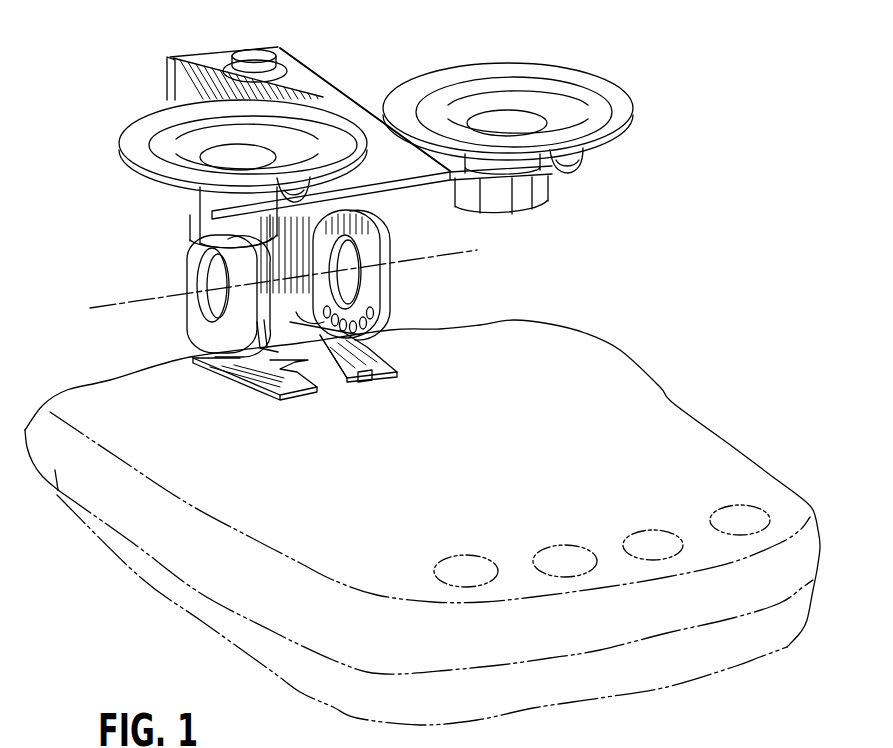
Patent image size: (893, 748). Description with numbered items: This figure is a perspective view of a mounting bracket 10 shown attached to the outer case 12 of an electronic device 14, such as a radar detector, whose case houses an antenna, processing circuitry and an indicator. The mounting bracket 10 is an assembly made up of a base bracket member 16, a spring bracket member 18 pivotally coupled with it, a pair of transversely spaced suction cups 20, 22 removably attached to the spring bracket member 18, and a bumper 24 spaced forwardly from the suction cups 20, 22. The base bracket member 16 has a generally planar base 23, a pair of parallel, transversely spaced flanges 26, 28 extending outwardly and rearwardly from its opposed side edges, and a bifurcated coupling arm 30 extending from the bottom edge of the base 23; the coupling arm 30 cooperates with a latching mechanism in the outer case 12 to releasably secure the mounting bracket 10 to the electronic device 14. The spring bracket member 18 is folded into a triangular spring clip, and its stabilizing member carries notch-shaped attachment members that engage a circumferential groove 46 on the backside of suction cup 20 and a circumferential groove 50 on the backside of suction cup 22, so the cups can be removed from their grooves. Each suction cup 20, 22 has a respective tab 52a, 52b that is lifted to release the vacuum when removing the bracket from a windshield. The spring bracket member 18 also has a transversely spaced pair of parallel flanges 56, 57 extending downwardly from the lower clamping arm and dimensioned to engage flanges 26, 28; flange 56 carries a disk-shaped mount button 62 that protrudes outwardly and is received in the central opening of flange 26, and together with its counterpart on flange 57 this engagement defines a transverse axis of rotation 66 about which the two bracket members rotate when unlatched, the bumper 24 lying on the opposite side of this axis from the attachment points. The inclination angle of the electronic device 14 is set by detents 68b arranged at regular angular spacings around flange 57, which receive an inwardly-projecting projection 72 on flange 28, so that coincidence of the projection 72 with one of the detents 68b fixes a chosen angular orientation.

The mounting bracket 10 is at (572, 36).
The outer case 12 is at (613, 342).
The electronic device 14 is at (763, 653).
The base bracket member 16 is at (190, 282).
The spring bracket member 18 is at (311, 76).
The suction cup 20 is at (134, 117).
The suction cup 22 is at (447, 66).
The base 23 is at (293, 332).
The bumper 24 is at (249, 51).
The flange 26 is at (203, 333).
The flange 28 is at (391, 265).
The bifurcated coupling arm 30 is at (384, 382).
The circumferential groove 46 is at (191, 215).
The circumferential groove 50 is at (547, 205).
The tab 52a is at (297, 182).
The tab 52b is at (573, 170).
The flange 56 is at (258, 362).
The flange 57 is at (357, 334).
The mount button 62 is at (207, 307).
The transverse axis of rotation 66 is at (428, 258).
The detents 68b is at (323, 323).
The projection 72 is at (382, 323).